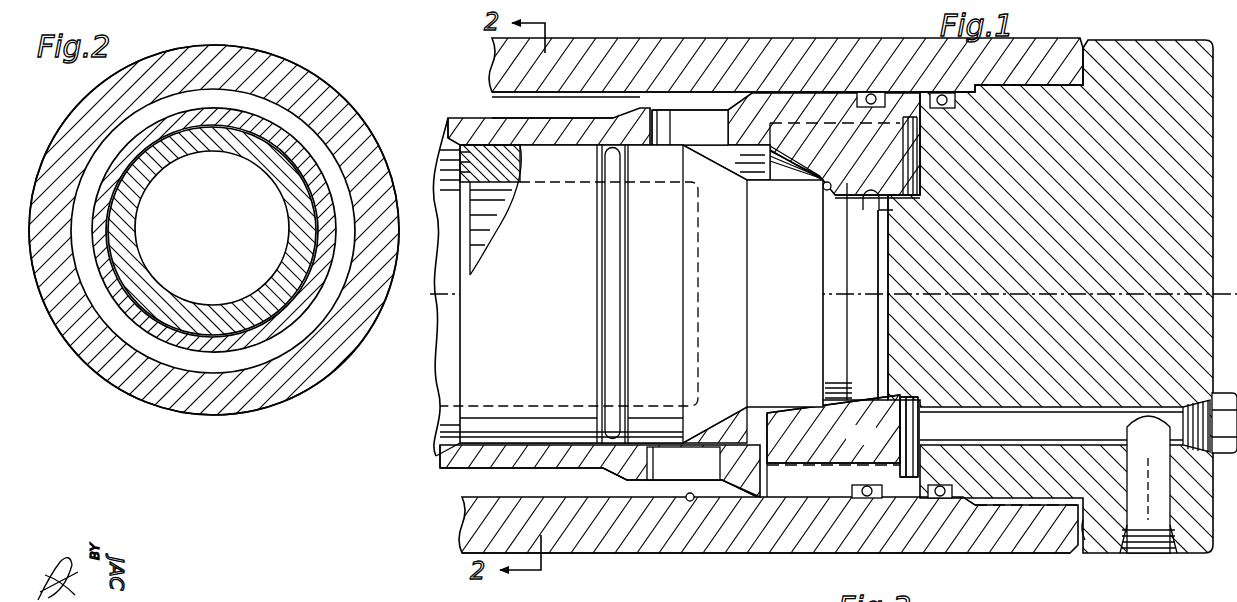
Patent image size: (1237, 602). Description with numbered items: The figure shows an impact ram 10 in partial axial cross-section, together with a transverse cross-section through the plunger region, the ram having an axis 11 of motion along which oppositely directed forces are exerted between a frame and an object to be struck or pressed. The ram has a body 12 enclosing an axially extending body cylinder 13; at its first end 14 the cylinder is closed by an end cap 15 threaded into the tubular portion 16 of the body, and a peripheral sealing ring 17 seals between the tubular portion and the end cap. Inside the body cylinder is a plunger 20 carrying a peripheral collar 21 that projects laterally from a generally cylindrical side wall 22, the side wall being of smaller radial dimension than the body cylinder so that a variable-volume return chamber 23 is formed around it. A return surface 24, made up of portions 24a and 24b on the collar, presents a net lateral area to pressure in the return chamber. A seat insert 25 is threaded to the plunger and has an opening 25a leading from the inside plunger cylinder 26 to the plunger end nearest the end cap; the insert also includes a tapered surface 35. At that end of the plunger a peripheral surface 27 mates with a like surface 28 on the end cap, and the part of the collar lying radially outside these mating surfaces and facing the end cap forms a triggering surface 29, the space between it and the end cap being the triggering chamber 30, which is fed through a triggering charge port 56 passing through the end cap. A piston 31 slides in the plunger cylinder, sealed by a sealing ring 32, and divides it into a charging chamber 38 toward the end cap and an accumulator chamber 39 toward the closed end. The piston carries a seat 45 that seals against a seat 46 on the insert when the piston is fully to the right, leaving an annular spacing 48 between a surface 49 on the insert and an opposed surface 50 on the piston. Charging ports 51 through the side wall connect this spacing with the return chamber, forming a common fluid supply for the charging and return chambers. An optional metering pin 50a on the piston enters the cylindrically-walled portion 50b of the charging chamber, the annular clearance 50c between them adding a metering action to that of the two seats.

In FIG. 2, the impact ram 10 is at (135, 418).
In FIG. 1, the impact ram 10 is at (410, 481).
In FIG. 1, the axis of motion 11 is at (1228, 297).
In FIG. 2, the body 12 is at (243, 413).
In FIG. 1, the body 12 is at (635, 554).
In FIG. 1, the body cylinder 13 is at (690, 502).
In FIG. 1, the first end 14 is at (1083, 532).
In FIG. 1, the end cap 15 is at (1085, 194).
In FIG. 1, the tubular portion 16 is at (782, 553).
In FIG. 1, the peripheral sealing ring 17 is at (945, 500).
In FIG. 1, the sleeve 20 is at (457, 474).
In FIG. 1, the peripheral collar 21 is at (803, 86).
In FIG. 1, the cylindrical side wall 22 is at (466, 118).
In FIG. 2, the return chamber 23 is at (222, 110).
In FIG. 1, the return chamber 23 is at (572, 113).
In FIG. 1, the return surface 24 is at (602, 481).
In FIG. 1, the return surface portion 24a is at (606, 483).
In FIG. 1, the return surface portion 24b is at (742, 500).
In FIG. 1, the seat insert 25 is at (835, 466).
In FIG. 1, the opening 25a is at (880, 418).
In FIG. 1, the plunger cylinder 26 is at (483, 443).
In FIG. 1, the peripheral surface 27 is at (905, 395).
In FIG. 1, the mating surface 28 is at (833, 443).
In FIG. 1, the triggering surface 29 is at (905, 428).
In FIG. 1, the triggering chamber 30 is at (915, 457).
In FIG. 2, the piston 31 is at (143, 257).
In FIG. 1, the piston 31 is at (540, 289).
In FIG. 1, the sealing ring 32 is at (605, 350).
In FIG. 1, the tapered surface 35 is at (815, 182).
In FIG. 1, the charging chamber 38 is at (895, 262).
In FIG. 1, the accumulator chamber 39 is at (457, 259).
In FIG. 1, the seat 45 is at (842, 194).
In FIG. 1, the seat 46 is at (829, 182).
In FIG. 1, the annular spacing 48 is at (714, 294).
In FIG. 1, the surface 49 is at (788, 405).
In FIG. 1, the opposed surface 50 is at (718, 148).
In FIG. 1, the metering pin 50a is at (878, 316).
In FIG. 1, the cylindrically-walled portion 50b is at (895, 210).
In FIG. 1, the annular clearance 50c is at (878, 398).
In FIG. 1, the charging ports 51 is at (668, 102).
In FIG. 1, the triggering charge port 56 is at (1160, 501).